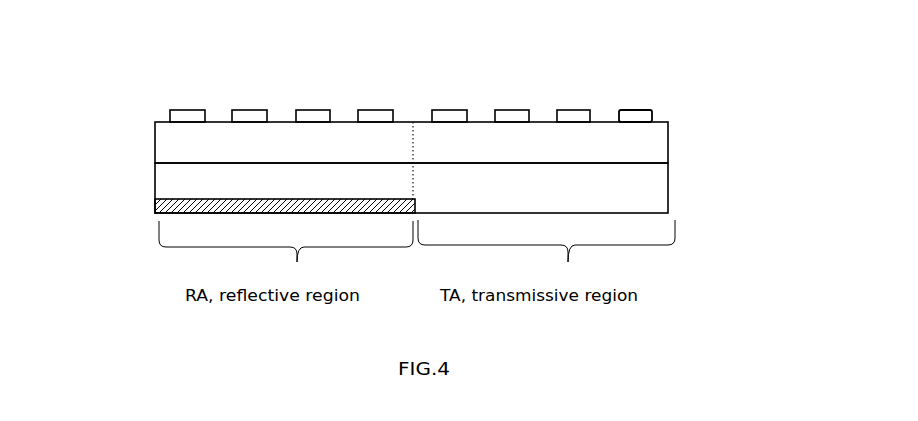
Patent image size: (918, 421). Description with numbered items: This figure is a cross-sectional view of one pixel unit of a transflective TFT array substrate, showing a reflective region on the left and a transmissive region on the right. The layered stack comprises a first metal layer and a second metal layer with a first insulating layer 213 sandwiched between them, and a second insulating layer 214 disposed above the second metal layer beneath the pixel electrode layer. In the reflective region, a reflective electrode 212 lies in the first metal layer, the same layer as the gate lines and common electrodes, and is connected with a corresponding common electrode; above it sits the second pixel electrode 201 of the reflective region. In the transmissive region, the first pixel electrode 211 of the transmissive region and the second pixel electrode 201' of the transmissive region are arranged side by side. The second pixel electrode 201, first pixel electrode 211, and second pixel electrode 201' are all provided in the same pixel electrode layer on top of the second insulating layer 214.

The second pixel electrode of the reflective region 201 is at (268, 95).
The second pixel electrode of the transmissive region 201' is at (652, 85).
The first pixel electrode of the transmissive region 211 is at (448, 108).
The reflective electrode 212 is at (155, 202).
The first insulating layer 213 is at (640, 185).
The second insulating layer 214 is at (640, 152).